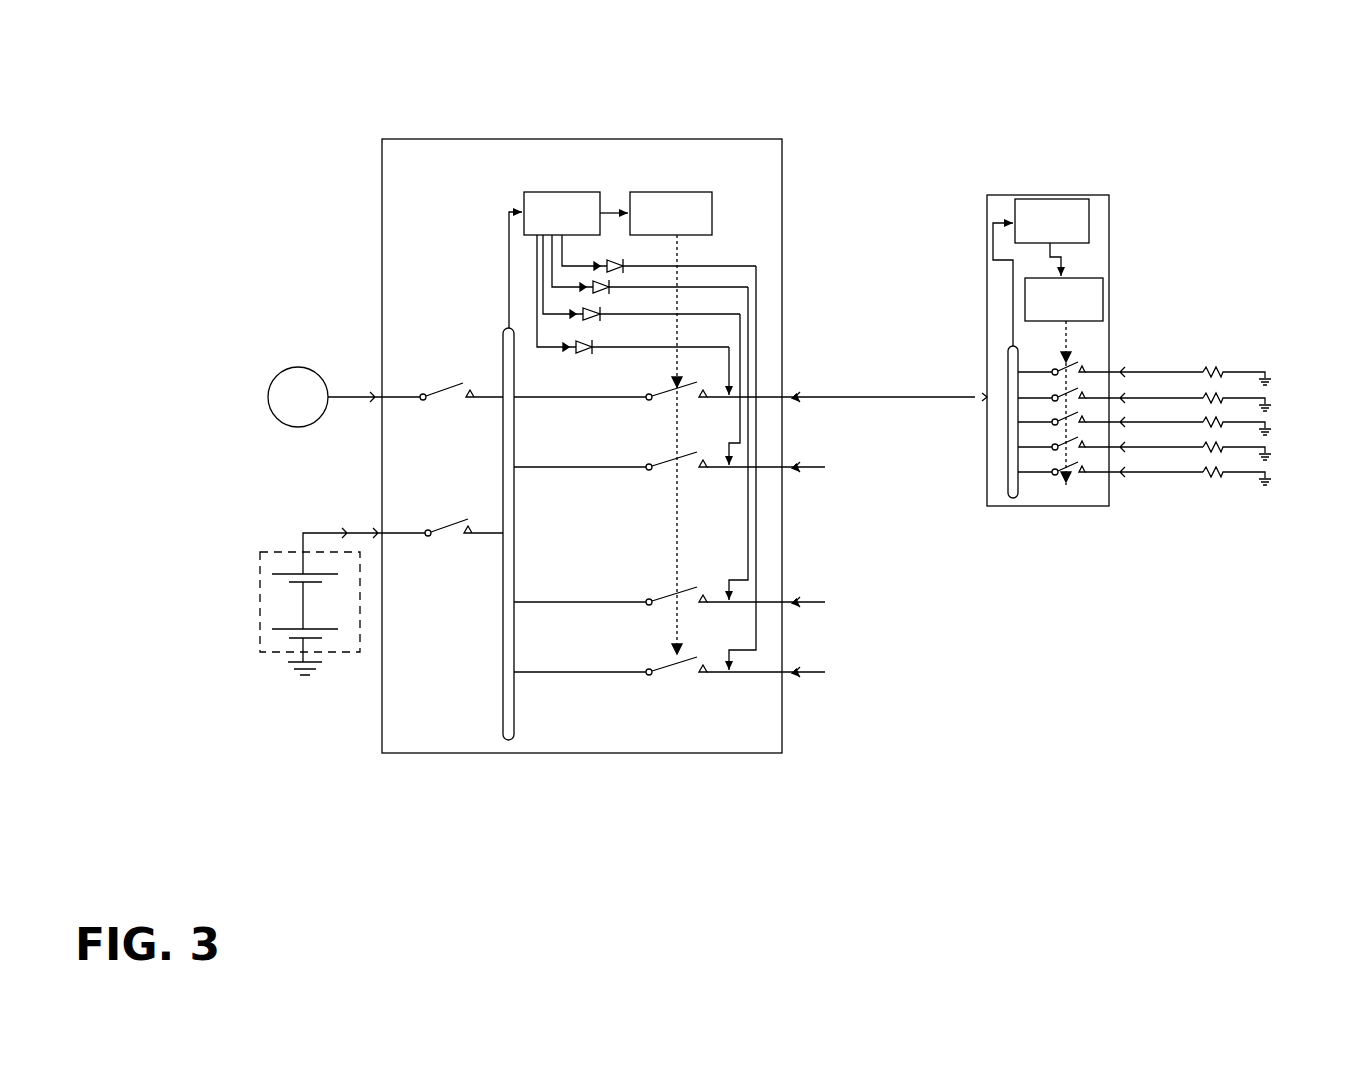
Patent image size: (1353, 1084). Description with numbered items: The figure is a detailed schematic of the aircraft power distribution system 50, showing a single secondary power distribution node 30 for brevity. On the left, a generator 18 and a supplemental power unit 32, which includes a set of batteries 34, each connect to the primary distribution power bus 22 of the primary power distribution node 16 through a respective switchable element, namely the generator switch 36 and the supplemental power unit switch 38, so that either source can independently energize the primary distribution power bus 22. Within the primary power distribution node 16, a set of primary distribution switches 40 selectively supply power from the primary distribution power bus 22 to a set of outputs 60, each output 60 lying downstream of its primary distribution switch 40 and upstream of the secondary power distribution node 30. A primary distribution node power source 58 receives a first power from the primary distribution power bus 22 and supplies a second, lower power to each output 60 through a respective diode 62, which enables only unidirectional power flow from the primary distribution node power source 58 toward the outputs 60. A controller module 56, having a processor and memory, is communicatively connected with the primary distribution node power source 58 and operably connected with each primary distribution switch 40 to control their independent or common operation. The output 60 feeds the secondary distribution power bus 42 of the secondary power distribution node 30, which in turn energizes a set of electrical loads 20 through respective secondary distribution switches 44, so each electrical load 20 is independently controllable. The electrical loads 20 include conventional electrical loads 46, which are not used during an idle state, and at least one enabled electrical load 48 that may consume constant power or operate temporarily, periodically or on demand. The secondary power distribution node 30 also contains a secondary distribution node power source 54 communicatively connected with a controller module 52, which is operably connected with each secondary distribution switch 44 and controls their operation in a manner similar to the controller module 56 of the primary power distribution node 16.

The primary power distribution node 16 is at (431, 138).
The generator 18 is at (289, 409).
The electrical load 20 is at (1213, 334).
The primary distribution power bus 22 is at (500, 343).
The secondary power distribution node 30 is at (995, 193).
The supplemental power unit 32 is at (258, 598).
The set of batteries 34 is at (268, 641).
The generator switch 36 is at (446, 362).
The supplemental power unit switch 38 is at (459, 558).
The primary distribution switch 40 is at (656, 650).
The secondary distribution power bus 42 is at (1000, 470).
The secondary distribution switch 44 is at (1083, 456).
The conventional electrical load 46 is at (1225, 394).
The enabled electrical load 48 is at (1226, 470).
The power distribution system 50 is at (643, 64).
The controller module 52 is at (1055, 312).
The secondary distribution node power source 54 is at (1043, 233).
The controller module 56 is at (662, 226).
The primary distribution node power source 58 is at (553, 226).
The output 60 is at (736, 406).
The diode 62 is at (635, 283).